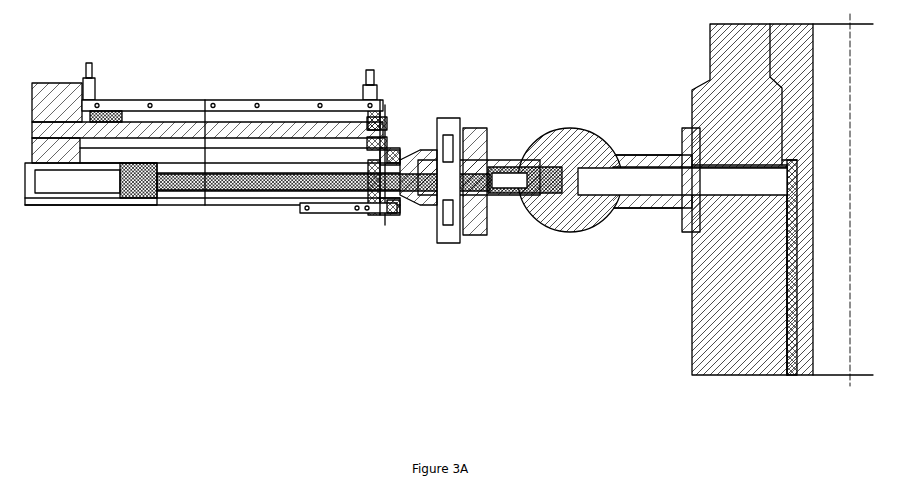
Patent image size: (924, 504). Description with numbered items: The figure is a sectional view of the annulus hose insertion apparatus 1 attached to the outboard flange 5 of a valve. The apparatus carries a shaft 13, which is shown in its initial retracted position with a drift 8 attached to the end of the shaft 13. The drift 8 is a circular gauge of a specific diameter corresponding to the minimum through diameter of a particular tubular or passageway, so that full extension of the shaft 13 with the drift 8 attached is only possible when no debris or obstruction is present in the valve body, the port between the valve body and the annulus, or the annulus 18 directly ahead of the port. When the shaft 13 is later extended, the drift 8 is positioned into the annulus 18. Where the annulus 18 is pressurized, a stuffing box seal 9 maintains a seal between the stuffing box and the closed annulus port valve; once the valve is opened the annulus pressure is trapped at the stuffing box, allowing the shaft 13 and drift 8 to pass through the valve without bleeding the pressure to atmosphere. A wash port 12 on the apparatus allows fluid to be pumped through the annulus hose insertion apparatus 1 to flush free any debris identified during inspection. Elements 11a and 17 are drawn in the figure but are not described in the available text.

The annulus hose insertion apparatus 1 is at (190, 82).
The outboard flange 5 is at (478, 237).
The drift 8 is at (545, 162).
The stuffing box seal 9 is at (410, 175).
The ball joint head 11a is at (575, 162).
The wash port 12 is at (453, 122).
The shaft 13 is at (272, 178).
The fixed block 17 is at (830, 143).
The annulus 18 is at (793, 362).